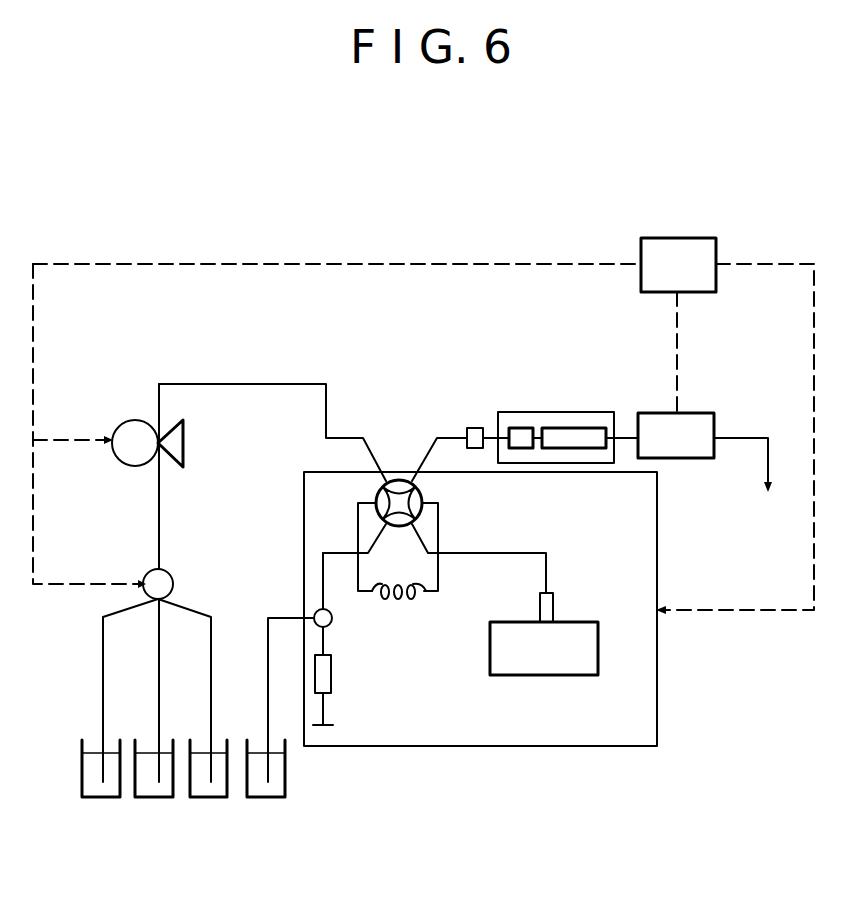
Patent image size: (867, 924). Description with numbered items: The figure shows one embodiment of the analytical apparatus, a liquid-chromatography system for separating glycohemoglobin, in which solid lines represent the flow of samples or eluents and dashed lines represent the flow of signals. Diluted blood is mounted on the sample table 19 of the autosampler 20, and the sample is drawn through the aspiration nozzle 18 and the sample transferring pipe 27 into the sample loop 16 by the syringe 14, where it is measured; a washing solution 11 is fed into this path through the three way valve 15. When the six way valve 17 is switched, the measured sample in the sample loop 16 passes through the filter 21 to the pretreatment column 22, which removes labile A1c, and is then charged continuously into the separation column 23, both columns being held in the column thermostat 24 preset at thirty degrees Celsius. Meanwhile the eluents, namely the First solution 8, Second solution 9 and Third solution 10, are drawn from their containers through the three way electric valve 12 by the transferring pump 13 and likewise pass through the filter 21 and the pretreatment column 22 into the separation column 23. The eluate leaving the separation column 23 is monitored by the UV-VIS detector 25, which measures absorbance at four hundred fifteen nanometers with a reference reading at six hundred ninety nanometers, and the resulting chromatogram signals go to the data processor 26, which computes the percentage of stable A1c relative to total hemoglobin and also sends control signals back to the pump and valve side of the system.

The First solution 8 is at (100, 800).
The Second solution 9 is at (155, 800).
The Third solution 10 is at (207, 800).
The Washing solution 11 is at (265, 800).
The three way electric valve 12 is at (173, 586).
The transferring pump 13 is at (184, 439).
The syringe 14 is at (331, 672).
The three way valve 15 is at (314, 608).
The sample loop 16 is at (397, 601).
The six way valve 17 is at (421, 487).
The aspiration nozzle 18 is at (554, 612).
The sample table 19 is at (543, 677).
The autosampler 20 is at (537, 748).
The filter 21 is at (470, 428).
The pretreatment column 22 is at (518, 428).
The separation column 23 is at (572, 428).
The column thermostat 24 is at (600, 412).
The UV-VIS detector 25 is at (700, 413).
The data processor 26 is at (677, 238).
The sample transferring pipe 27 is at (527, 554).